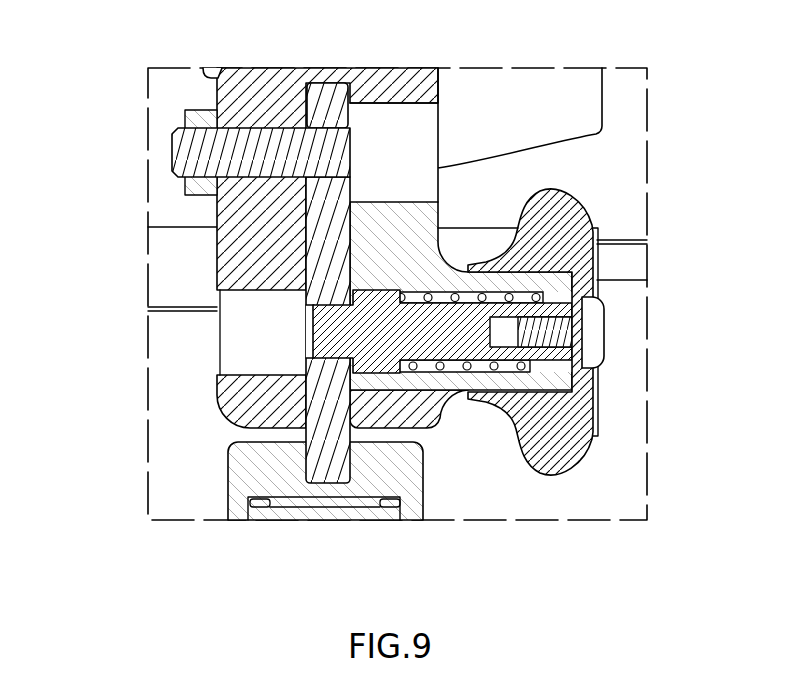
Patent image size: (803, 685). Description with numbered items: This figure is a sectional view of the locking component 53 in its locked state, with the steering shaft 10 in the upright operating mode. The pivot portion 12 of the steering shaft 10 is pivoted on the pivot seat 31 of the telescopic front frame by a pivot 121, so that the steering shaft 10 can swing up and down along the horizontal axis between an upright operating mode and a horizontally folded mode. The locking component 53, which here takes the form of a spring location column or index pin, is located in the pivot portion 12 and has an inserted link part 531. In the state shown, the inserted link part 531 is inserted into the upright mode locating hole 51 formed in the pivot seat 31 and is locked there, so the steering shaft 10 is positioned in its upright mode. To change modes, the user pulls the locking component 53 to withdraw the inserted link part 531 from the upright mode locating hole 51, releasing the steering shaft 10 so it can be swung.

The steering shaft 10 is at (250, 74).
The pivot portion 12 is at (462, 118).
The pivot 121 is at (172, 152).
The pivot seat 31 is at (322, 242).
The upright mode locating hole 51 is at (308, 357).
The locking component 53 is at (612, 200).
The inserted link part 531 is at (338, 330).